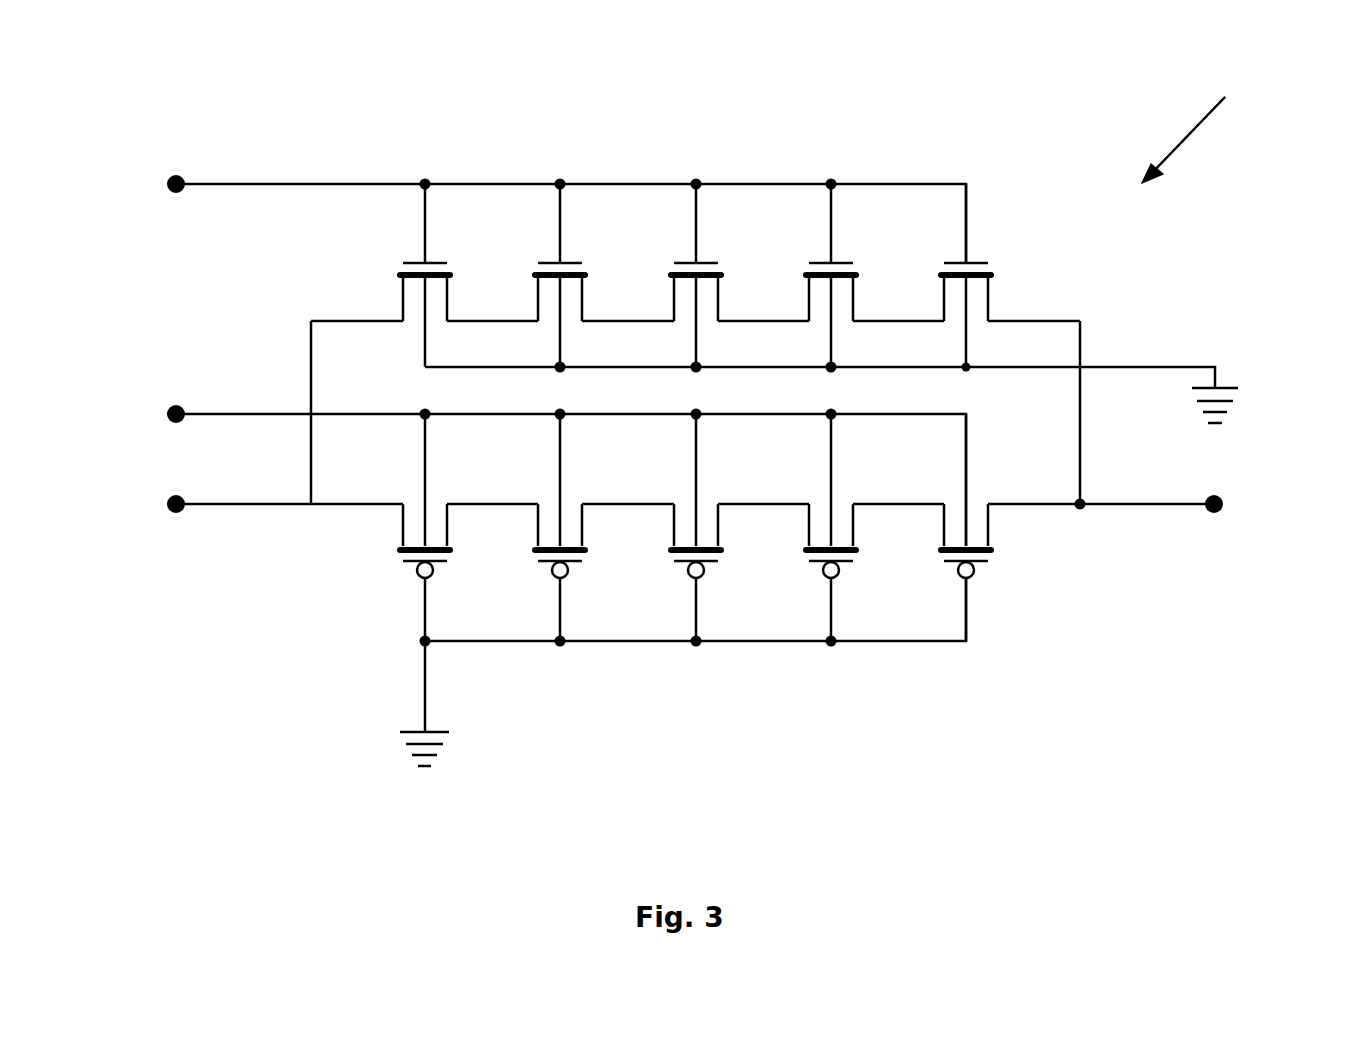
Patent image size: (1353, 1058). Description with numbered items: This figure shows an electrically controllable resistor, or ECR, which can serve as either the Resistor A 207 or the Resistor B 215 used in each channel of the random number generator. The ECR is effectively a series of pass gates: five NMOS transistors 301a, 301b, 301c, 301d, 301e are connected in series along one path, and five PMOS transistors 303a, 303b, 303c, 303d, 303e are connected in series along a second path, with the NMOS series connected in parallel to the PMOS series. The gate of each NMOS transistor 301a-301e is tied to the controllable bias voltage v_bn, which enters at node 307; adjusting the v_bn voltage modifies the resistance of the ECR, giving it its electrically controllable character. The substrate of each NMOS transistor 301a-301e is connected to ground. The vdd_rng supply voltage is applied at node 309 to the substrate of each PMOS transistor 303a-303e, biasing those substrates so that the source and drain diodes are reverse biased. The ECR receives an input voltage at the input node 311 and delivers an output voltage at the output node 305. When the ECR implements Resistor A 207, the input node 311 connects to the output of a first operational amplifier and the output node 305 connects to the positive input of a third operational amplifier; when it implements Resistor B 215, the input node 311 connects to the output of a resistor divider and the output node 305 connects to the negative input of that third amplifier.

The Resistor A 207 is at (1225, 97).
The Resistor B 215 is at (1225, 97).
The NMOS transistor 301a is at (403, 310).
The NMOS transistor 301b is at (538, 310).
The NMOS transistor 301c is at (674, 310).
The NMOS transistor 301d is at (809, 310).
The NMOS transistor 301e is at (944, 310).
The PMOS transistor 303a is at (403, 518).
The PMOS transistor 303b is at (538, 518).
The PMOS transistor 303c is at (674, 518).
The PMOS transistor 303d is at (809, 518).
The PMOS transistor 303e is at (944, 518).
The output node 305 is at (1210, 496).
The node 307 is at (180, 190).
The node 309 is at (180, 408).
The input node 311 is at (180, 510).